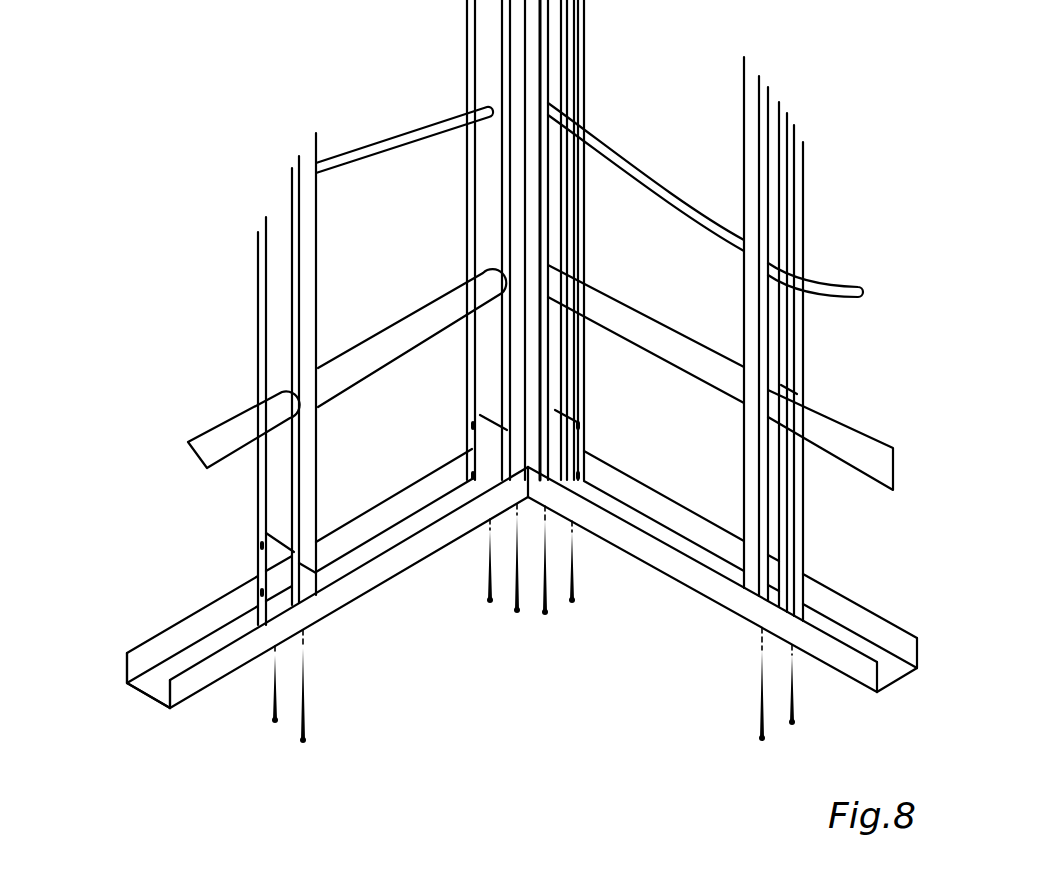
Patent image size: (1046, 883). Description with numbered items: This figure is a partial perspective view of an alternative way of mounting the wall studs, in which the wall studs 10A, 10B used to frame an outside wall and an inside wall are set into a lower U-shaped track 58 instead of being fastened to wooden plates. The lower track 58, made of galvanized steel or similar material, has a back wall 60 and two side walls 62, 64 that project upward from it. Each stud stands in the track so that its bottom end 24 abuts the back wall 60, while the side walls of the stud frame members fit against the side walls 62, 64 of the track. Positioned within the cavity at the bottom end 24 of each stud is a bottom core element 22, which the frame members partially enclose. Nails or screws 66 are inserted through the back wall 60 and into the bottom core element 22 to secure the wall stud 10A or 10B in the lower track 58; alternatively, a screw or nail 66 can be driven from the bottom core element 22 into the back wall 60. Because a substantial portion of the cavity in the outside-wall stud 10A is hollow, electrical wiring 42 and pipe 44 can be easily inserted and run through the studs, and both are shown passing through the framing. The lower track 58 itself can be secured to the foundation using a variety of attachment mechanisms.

The wall stud 10A is at (443, 48).
The wall stud 10B is at (846, 178).
The bottom core element 22 is at (789, 565).
The bottom end 24 is at (268, 608).
The electrical wiring 42 is at (652, 187).
The pipe 44 is at (643, 322).
The lower U-shaped track 58 is at (410, 551).
The back wall 60 is at (148, 700).
The side wall 62 is at (126, 667).
The side wall 64 is at (176, 696).
The nails or screws 66 is at (554, 615).